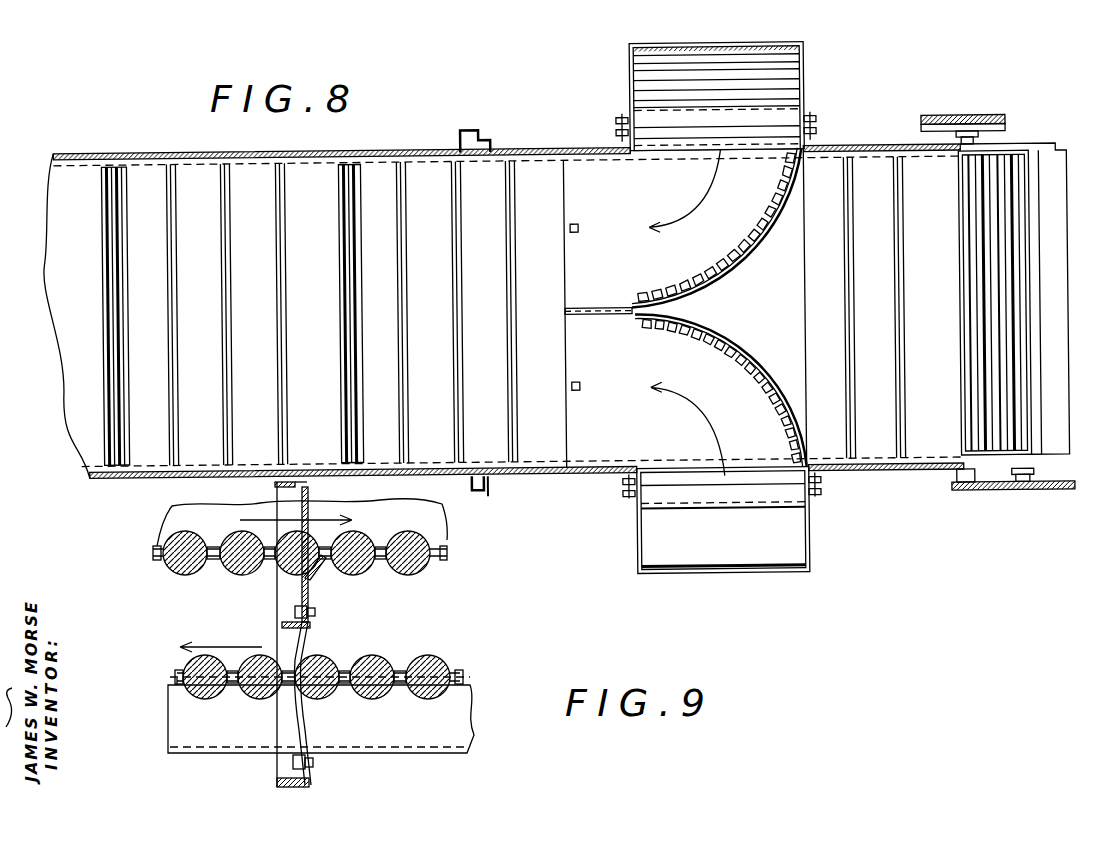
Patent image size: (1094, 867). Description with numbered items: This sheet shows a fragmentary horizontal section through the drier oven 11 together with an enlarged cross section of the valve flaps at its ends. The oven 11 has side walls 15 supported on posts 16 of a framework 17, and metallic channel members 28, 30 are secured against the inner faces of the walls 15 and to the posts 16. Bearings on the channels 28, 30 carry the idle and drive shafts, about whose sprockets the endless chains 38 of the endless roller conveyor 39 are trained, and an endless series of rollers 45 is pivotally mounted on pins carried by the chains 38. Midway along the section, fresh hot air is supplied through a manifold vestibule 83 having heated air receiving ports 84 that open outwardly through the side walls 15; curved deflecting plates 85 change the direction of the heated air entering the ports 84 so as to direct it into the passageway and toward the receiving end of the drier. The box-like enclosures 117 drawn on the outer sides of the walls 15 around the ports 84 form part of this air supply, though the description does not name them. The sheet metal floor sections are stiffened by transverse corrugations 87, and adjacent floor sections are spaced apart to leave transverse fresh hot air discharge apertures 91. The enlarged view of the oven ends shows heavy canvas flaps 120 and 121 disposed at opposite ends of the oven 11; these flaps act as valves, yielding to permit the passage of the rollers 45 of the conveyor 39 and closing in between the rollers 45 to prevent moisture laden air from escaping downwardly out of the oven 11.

In FIG. 8, the oven 11 is at (385, 175).
In FIG. 8, the side walls 15 is at (510, 149).
In FIG. 8, the posts 16 is at (463, 138).
In FIG. 9, the posts 16 is at (278, 598).
In FIG. 8, the framework 17 is at (482, 497).
In FIG. 9, the channel member 28 is at (468, 737).
In FIG. 9, the channel member 30 is at (176, 523).
In FIG. 9, the endless chains 38 is at (438, 560).
In FIG. 9, the endless roller conveyor 39 is at (425, 648).
In FIG. 9, the rollers 45 is at (375, 540).
In FIG. 8, the manifold vestibule 83 is at (608, 172).
In FIG. 8, the heated air receiving ports 84 is at (650, 140).
In FIG. 8, the curved deflecting plates 85 is at (726, 334).
In FIG. 8, the transverse corrugations 87 is at (232, 176).
In FIG. 8, the fresh hot air discharge apertures 91 is at (118, 172).
In FIG. 8, the belt housing 117 is at (775, 45).
In FIG. 9, the canvas flap 120 is at (300, 717).
In FIG. 9, the canvas flap 121 is at (310, 574).